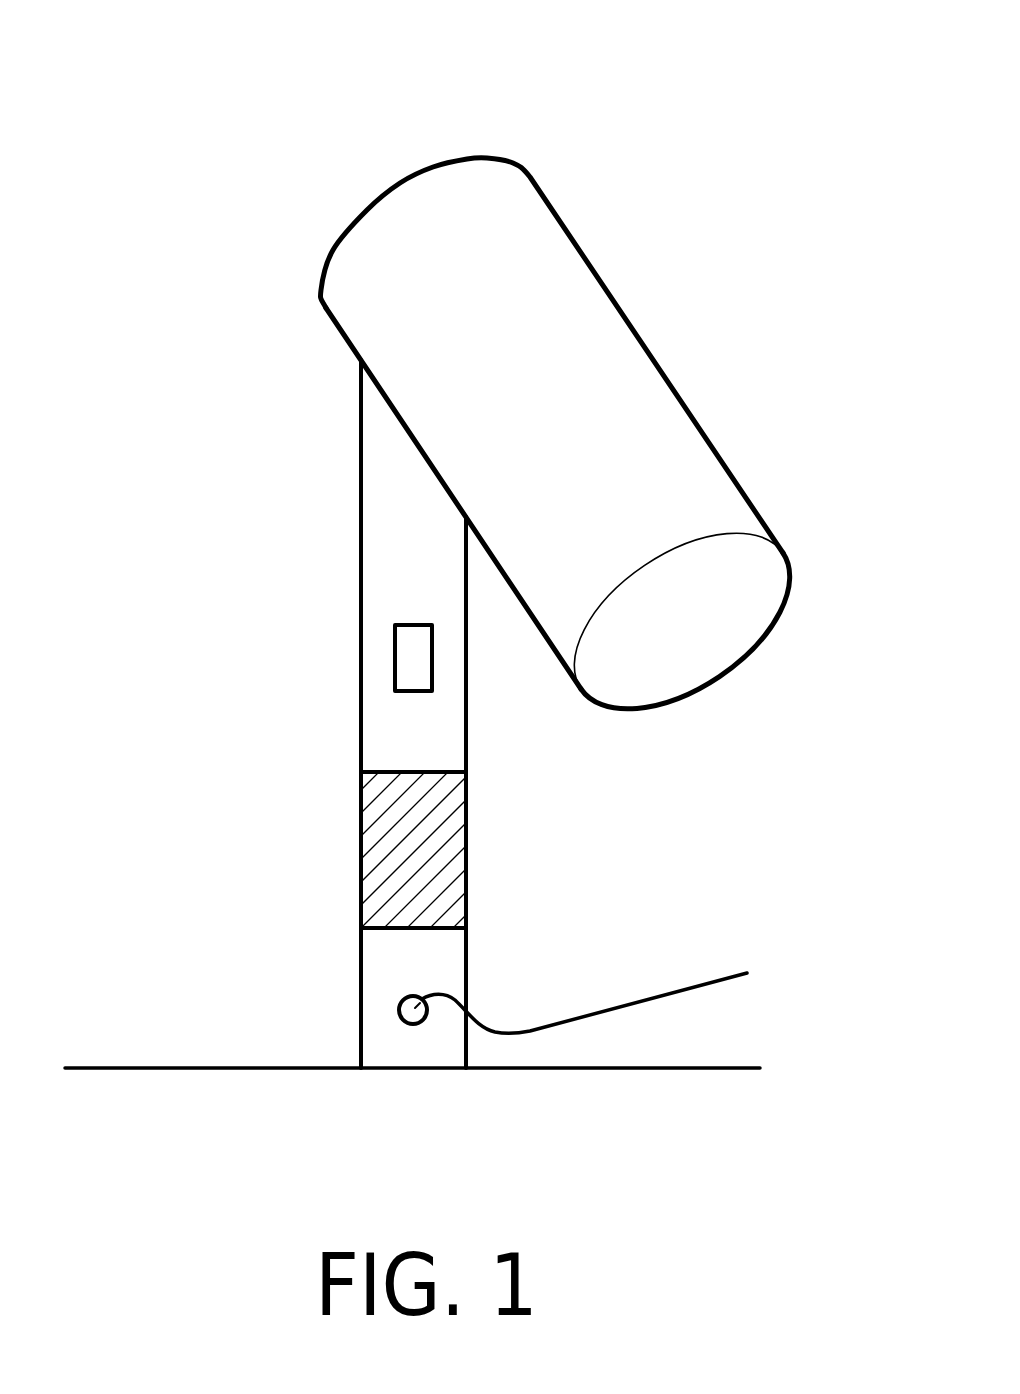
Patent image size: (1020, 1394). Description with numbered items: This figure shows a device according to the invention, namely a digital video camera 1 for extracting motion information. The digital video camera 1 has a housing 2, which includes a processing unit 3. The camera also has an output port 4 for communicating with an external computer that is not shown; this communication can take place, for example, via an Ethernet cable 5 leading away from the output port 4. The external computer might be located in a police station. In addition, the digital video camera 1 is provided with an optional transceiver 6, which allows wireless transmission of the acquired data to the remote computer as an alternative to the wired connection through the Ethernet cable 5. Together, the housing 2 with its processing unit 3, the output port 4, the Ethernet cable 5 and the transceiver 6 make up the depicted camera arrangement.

The digital video camera 1 is at (685, 102).
The housing 2 is at (361, 737).
The processing unit 3 is at (372, 866).
The output port 4 is at (413, 1025).
The Ethernet cable 5 is at (662, 998).
The transceiver 6 is at (395, 658).